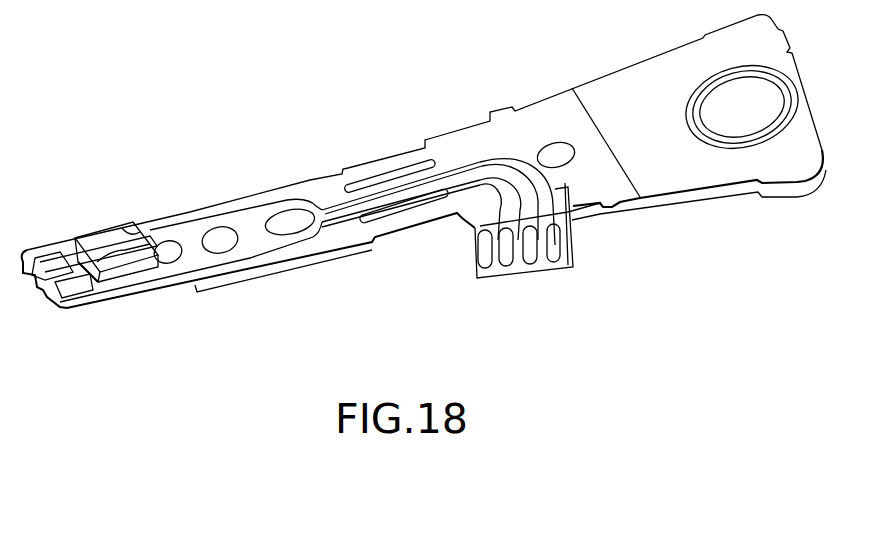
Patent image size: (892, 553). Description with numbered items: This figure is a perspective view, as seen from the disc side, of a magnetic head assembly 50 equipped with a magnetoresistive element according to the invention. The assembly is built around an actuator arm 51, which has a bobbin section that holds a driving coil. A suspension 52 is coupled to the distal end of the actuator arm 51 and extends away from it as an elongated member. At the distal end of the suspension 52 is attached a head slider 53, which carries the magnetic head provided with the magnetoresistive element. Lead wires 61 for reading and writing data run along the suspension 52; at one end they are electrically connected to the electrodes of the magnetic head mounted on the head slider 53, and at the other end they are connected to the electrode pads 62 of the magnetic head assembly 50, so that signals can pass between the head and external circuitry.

The magnetic head assembly 50 is at (408, 95).
The actuator arm 51 is at (700, 177).
The suspension 52 is at (315, 185).
The head slider 53 is at (98, 226).
The lead wires 61 is at (260, 250).
The electrode pads 62 is at (533, 258).